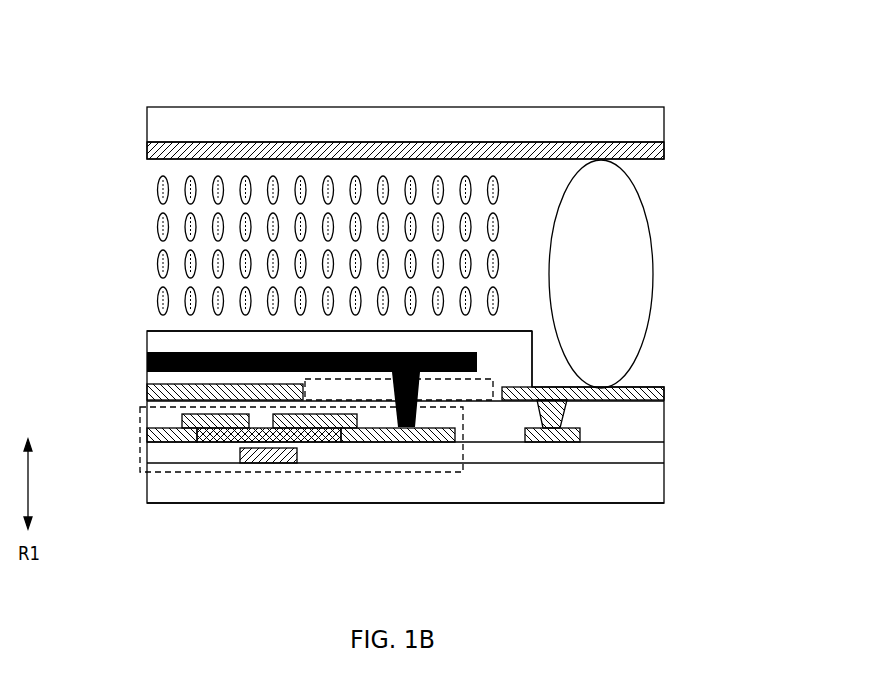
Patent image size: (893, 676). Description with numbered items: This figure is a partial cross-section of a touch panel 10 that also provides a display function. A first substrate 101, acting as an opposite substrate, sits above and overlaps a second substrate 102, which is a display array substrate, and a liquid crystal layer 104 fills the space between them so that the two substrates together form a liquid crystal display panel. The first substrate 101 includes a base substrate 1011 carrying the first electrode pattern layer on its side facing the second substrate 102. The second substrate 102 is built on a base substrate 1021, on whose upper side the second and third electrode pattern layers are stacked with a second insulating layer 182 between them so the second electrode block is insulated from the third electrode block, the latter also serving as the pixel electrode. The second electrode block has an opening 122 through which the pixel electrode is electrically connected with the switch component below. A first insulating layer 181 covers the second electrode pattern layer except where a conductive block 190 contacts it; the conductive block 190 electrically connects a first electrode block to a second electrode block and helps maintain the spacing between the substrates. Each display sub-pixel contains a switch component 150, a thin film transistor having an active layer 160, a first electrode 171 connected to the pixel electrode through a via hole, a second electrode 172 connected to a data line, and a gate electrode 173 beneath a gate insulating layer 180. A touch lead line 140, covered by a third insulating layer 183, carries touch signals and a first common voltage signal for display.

The touch panel 10 is at (742, 58).
The first substrate 101 is at (125, 107).
The base substrate 1011 is at (651, 127).
The liquid crystal layer 104 is at (125, 168).
The conductive block 190 is at (623, 229).
The second substrate 102 is at (125, 331).
The first insulating layer 181 is at (500, 347).
The opening 122 is at (490, 373).
The second insulating layer 182 is at (512, 380).
The third insulating layer 183 is at (640, 422).
The gate insulating layer 180 is at (640, 455).
The base substrate 1021 is at (640, 494).
The switch component 150 is at (223, 472).
The second electrode 172 is at (188, 433).
The active layer 160 is at (313, 435).
The first electrode 171 is at (378, 435).
The gate electrode 173 is at (275, 460).
The touch lead line 140 is at (562, 440).